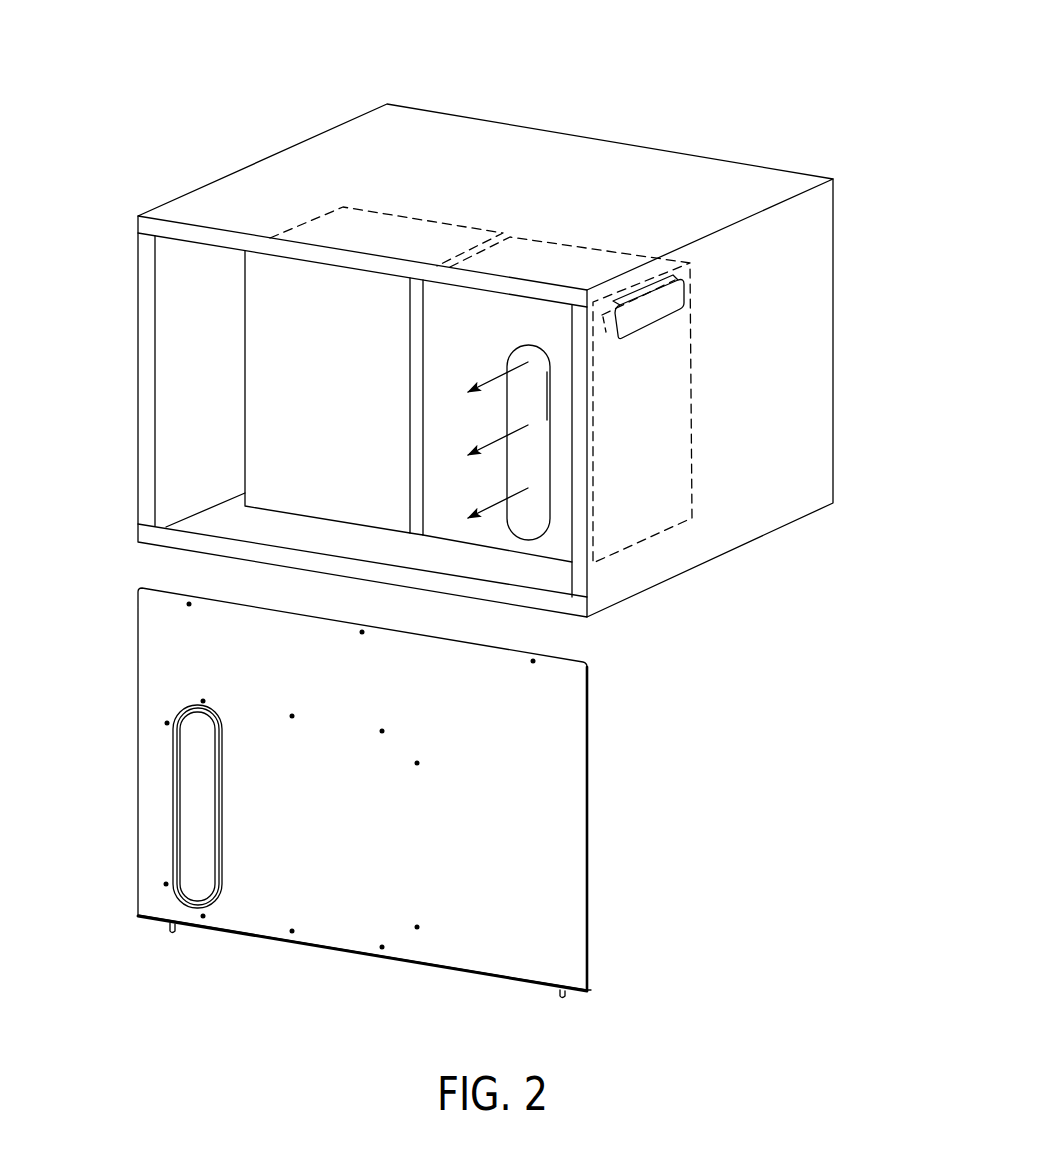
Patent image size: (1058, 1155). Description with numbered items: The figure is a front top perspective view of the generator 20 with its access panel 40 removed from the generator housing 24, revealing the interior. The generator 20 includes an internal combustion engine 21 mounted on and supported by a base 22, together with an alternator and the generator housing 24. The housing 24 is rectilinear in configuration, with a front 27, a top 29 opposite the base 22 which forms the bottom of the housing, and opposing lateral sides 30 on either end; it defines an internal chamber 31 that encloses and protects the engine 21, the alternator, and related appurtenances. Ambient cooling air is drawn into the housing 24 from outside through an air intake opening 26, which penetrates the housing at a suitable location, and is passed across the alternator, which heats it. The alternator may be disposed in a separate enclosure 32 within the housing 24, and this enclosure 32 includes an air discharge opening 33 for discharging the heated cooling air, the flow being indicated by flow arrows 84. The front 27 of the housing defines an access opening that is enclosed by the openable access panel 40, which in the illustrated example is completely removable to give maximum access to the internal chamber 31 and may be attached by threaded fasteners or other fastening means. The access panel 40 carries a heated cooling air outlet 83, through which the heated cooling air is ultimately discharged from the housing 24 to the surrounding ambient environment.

The generator 20 is at (220, 140).
The internal combustion engine 21 is at (337, 372).
The base 22 is at (553, 578).
The generator housing 24 is at (668, 178).
The air intake opening 26 is at (675, 318).
The front 27 is at (175, 544).
The top 29 is at (508, 137).
The lateral sides 30 is at (132, 280).
The internal chamber 31 is at (192, 462).
The alternator enclosure 32 is at (472, 339).
The air discharge opening 33 is at (550, 480).
The access panel 40 is at (567, 812).
The heated cooling air outlet 83 is at (177, 780).
The flow arrows 84 is at (515, 493).